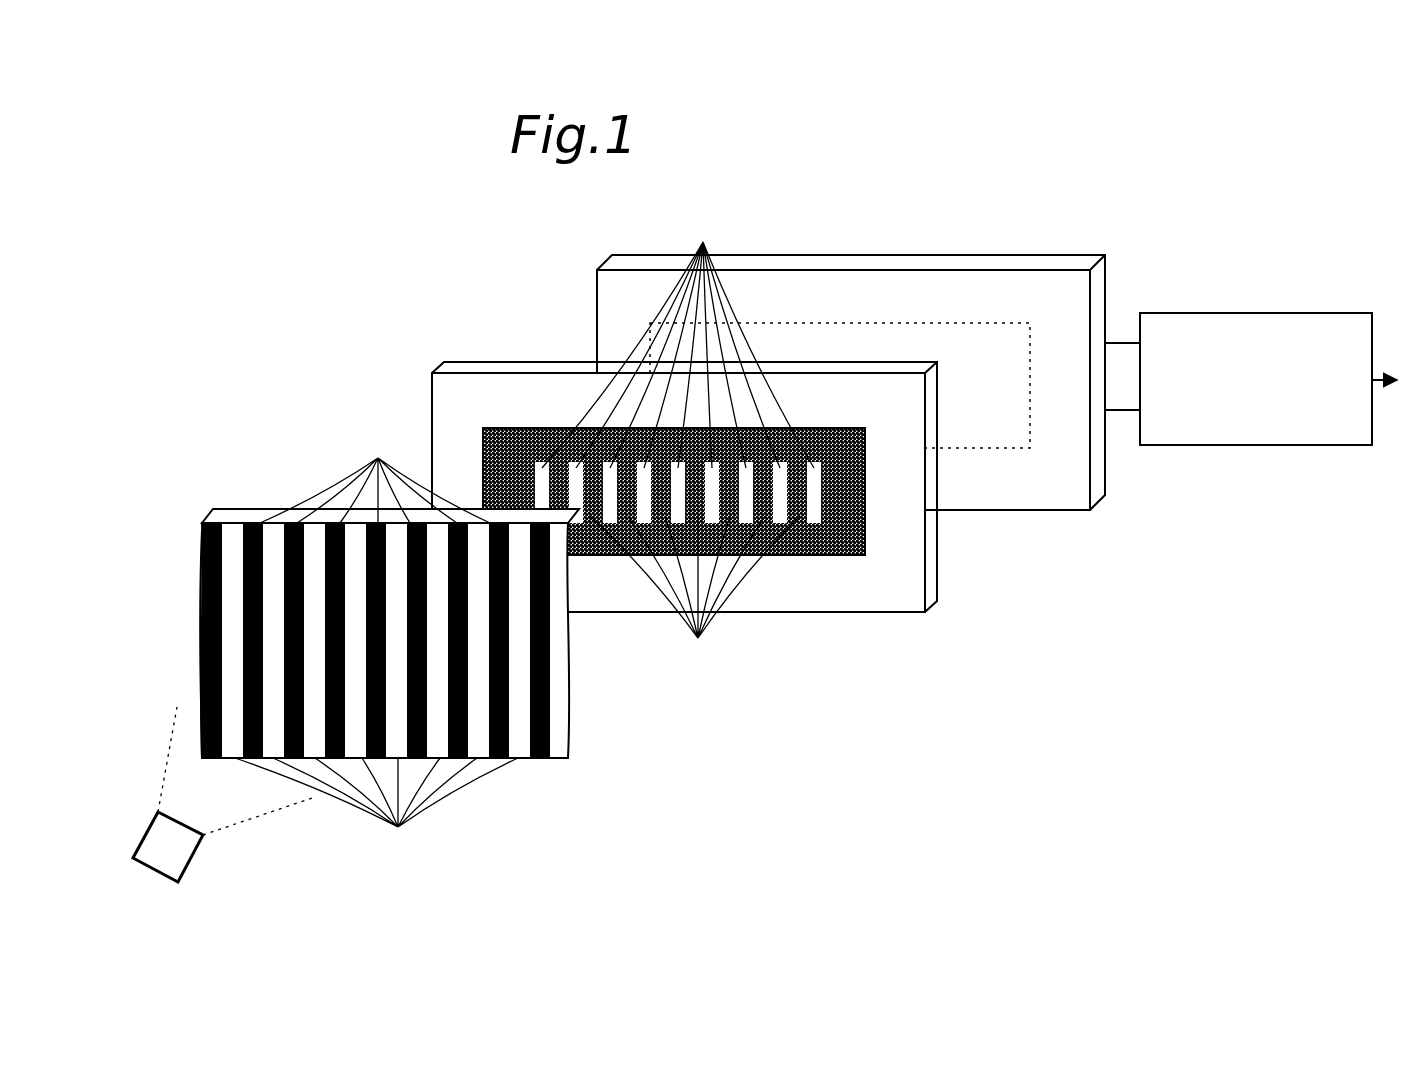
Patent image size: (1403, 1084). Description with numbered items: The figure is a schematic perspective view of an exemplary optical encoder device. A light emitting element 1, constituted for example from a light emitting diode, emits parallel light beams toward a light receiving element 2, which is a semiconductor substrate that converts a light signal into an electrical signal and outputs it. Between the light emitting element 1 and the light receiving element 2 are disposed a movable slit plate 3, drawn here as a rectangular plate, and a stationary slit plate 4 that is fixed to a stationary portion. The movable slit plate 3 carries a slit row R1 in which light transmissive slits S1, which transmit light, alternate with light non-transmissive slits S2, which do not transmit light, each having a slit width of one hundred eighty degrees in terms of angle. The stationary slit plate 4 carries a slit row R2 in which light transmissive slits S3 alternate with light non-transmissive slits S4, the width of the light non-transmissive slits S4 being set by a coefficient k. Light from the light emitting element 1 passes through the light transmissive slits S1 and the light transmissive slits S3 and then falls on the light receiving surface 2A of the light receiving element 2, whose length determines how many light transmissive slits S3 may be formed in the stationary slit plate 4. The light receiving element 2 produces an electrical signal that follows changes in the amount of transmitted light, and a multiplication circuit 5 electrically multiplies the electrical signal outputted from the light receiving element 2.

The light emitting element 1 is at (182, 865).
The light receiving element 2 is at (1034, 253).
The light receiving surface 2A is at (1012, 428).
The movable slit plate 3 is at (198, 512).
The stationary slit plate 4 is at (454, 358).
The multiplication circuit 5 is at (1180, 447).
The light transmissive slits S1 is at (375, 470).
The light non-transmissive slits S2 is at (376, 814).
The light transmissive slits S3 is at (678, 334).
The light non-transmissive slits S4 is at (695, 598).
The slit row R1 is at (197, 585).
The slit row R2 is at (822, 505).